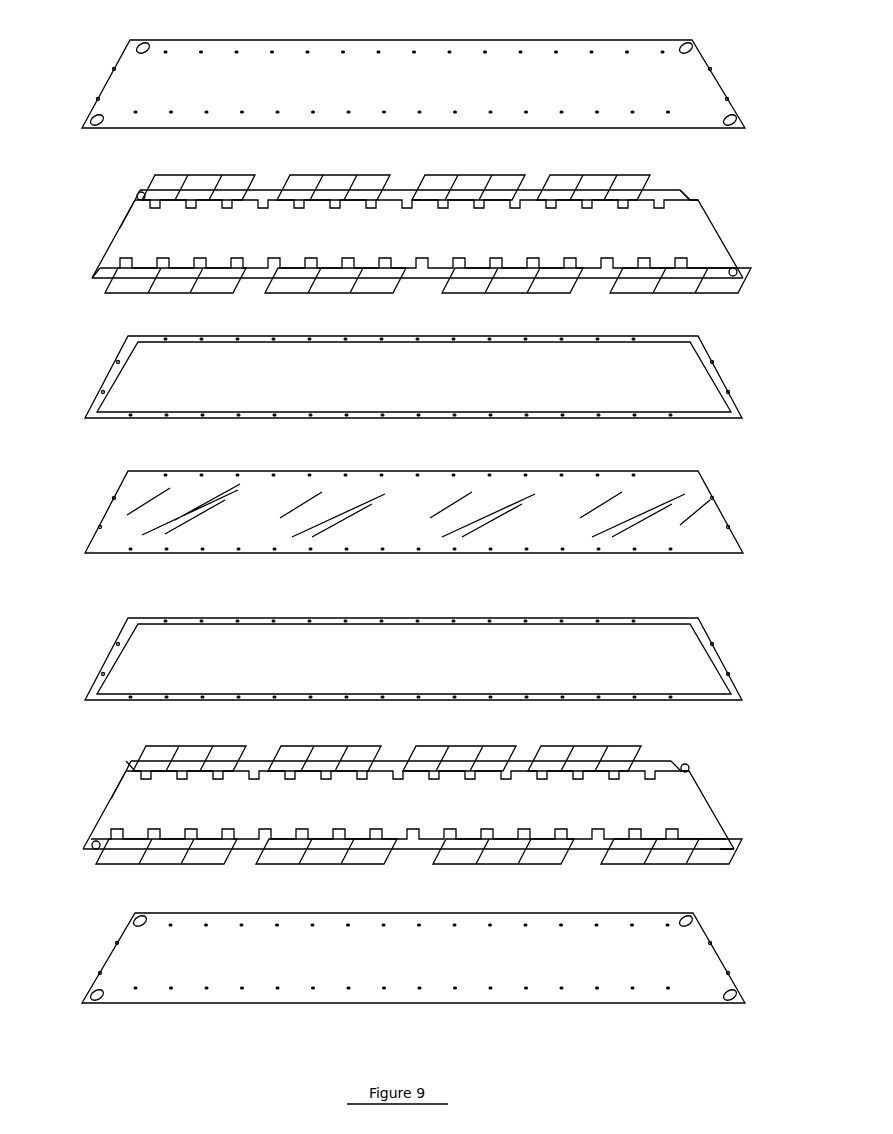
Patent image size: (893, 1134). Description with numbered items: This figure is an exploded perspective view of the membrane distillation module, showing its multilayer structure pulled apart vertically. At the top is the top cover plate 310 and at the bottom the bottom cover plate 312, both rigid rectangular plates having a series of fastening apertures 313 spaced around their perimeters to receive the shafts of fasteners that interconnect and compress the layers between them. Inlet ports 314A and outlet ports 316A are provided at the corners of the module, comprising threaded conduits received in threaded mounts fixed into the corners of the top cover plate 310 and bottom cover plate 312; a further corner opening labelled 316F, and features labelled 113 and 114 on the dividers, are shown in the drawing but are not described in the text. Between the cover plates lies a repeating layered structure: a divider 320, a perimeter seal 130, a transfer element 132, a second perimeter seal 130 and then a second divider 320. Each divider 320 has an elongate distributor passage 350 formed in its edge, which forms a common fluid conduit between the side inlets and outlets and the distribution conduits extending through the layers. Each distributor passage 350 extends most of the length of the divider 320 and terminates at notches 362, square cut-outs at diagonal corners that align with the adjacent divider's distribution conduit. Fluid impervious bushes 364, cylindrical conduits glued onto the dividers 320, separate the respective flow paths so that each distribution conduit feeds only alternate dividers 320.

The top cover plate 310 is at (505, 44).
The bottom cover plate 312 is at (595, 1000).
The fastening apertures 313 is at (165, 49).
The inlet ports 314A is at (138, 44).
The outlet ports 316A is at (738, 118).
The mounting hole 316F is at (135, 920).
The divider 320 is at (715, 240).
The distributor passage 350 is at (262, 195).
The corner notch 362 is at (695, 199).
The bush 364 is at (137, 192).
The frame edge member 113 is at (132, 200).
The ribs 114 is at (423, 519).
The perimeter seal 130 is at (728, 388).
The transfer element 132 is at (700, 497).